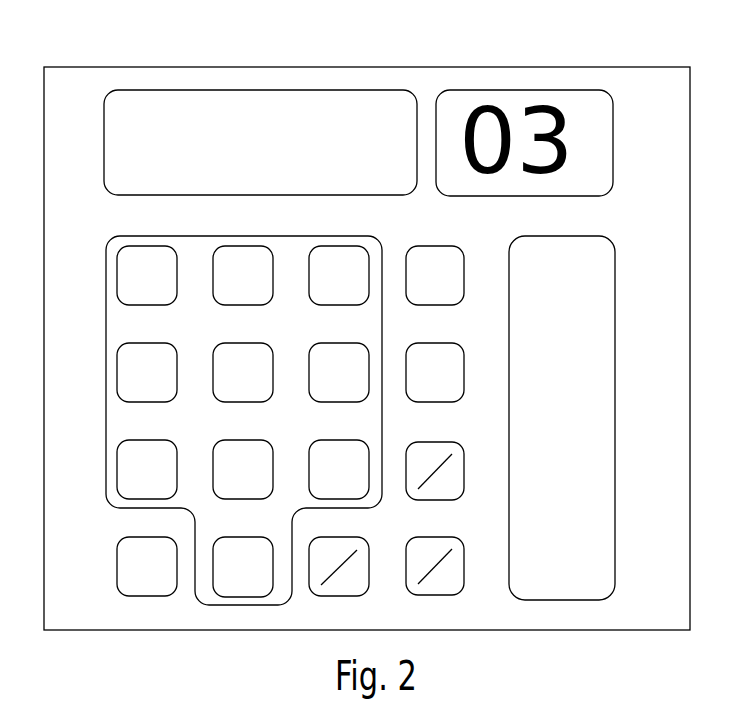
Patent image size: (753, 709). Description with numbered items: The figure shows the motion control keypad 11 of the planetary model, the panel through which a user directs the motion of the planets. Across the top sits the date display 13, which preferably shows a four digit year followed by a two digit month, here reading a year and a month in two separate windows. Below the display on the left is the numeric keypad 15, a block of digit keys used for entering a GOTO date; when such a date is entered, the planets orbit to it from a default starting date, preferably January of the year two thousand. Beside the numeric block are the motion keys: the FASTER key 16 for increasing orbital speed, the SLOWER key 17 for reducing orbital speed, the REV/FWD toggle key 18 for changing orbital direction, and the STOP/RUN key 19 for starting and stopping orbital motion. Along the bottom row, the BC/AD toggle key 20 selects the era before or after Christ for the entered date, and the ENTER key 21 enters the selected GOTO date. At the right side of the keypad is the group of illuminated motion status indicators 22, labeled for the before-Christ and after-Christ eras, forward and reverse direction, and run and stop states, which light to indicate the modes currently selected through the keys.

The motion control keypad 11 is at (690, 322).
The date display 13 is at (104, 145).
The numeric keypad 15 is at (106, 378).
The FASTER key 16 is at (458, 247).
The SLOWER key 17 is at (458, 344).
The REV/FWD toggle key 18 is at (458, 443).
The STOP/RUN key 19 is at (458, 538).
The BC/AD toggle key 20 is at (362, 538).
The ENTER key 21 is at (120, 537).
The illuminated motion status indicators 22 is at (610, 241).